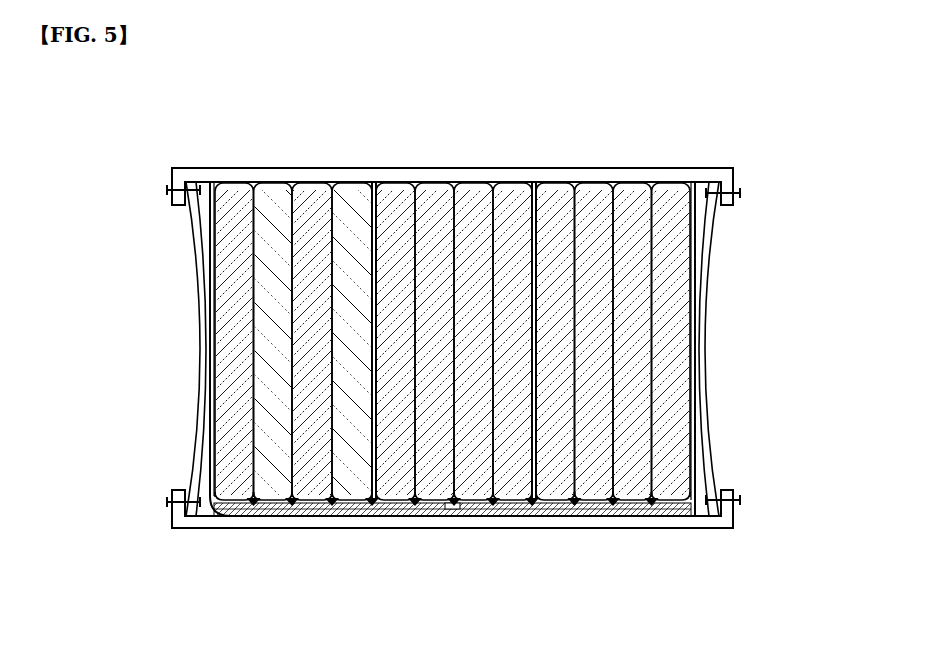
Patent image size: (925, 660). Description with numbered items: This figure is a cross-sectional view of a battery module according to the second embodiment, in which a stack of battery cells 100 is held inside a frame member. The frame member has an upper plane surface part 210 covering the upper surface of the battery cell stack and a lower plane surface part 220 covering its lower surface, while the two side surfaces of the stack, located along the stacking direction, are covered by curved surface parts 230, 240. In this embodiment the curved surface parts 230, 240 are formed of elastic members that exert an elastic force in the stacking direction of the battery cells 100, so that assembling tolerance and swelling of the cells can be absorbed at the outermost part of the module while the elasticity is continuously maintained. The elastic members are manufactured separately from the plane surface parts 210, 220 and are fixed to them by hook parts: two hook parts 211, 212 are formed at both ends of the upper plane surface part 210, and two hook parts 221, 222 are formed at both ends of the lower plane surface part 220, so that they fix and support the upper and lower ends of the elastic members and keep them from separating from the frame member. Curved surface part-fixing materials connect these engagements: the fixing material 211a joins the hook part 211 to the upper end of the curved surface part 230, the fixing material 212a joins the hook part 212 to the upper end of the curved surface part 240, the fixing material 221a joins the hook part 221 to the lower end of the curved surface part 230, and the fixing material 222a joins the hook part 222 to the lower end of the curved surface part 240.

The battery cell 100 is at (320, 301).
The upper plane surface part 210 is at (646, 168).
The hook part 211 is at (172, 184).
The curved surface part-fixing material 211a is at (168, 191).
The hook part 212 is at (733, 190).
The curved surface part-fixing material 212a is at (742, 196).
The lower plane surface part 220 is at (400, 522).
The hook part 221 is at (172, 522).
The curved surface part-fixing material 221a is at (168, 500).
The hook part 222 is at (733, 522).
The curved surface part-fixing material 222a is at (742, 500).
The curved surface part 230 is at (208, 358).
The curved surface part 240 is at (700, 335).